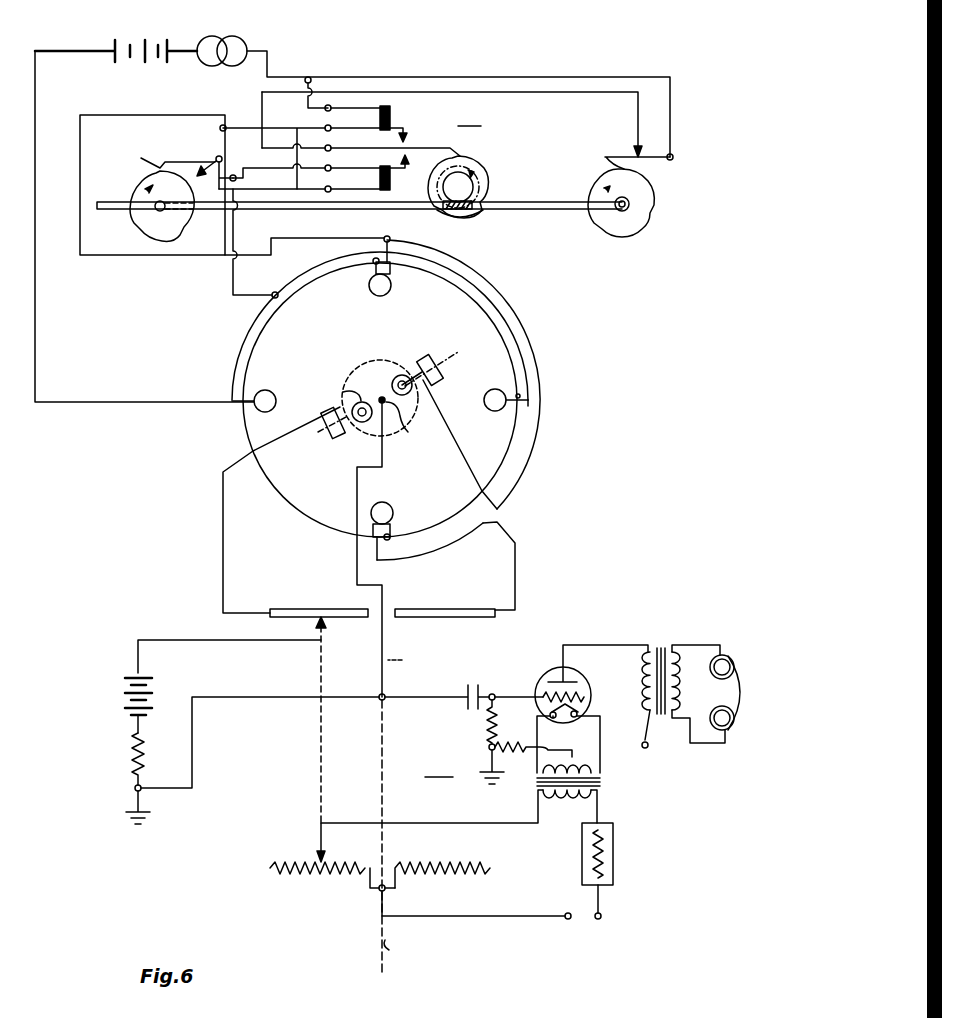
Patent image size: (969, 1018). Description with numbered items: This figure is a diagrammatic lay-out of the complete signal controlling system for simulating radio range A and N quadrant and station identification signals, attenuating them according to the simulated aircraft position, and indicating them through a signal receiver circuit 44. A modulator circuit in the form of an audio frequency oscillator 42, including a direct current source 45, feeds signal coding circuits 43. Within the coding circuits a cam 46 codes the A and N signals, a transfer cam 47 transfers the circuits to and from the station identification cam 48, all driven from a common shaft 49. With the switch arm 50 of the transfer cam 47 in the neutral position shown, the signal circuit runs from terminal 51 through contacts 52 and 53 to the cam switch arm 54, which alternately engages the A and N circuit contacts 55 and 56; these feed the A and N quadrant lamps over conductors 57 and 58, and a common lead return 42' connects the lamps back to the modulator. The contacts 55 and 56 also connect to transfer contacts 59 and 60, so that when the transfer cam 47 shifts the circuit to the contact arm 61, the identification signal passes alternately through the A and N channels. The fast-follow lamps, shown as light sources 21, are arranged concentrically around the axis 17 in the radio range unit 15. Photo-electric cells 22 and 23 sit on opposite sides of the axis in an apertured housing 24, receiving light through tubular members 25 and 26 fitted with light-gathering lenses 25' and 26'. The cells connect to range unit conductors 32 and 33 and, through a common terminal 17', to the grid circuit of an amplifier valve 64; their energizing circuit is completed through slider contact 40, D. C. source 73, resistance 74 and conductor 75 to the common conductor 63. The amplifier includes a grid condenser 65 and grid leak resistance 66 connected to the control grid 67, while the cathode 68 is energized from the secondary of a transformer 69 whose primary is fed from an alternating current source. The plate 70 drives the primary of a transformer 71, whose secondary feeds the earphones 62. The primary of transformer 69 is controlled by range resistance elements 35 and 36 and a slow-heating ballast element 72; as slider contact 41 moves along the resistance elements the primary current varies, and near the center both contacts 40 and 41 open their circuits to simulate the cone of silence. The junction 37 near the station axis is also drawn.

The radio range unit 15 is at (552, 372).
The axis 17 is at (399, 688).
The common terminal 17' is at (410, 419).
The light sources 21 is at (368, 290).
The photo-electric cell 22 is at (346, 392).
The photo-electric cell 23 is at (384, 368).
The apertured housing 24 is at (371, 359).
The tubular member 25 is at (303, 438).
The light-gathering lens 25' is at (317, 432).
The tubular member 26 is at (452, 408).
The light-gathering lens 26' is at (447, 369).
The range unit conductor 32 is at (306, 588).
The range unit conductor 33 is at (449, 586).
The range resistance element 35 is at (268, 866).
The range resistance element 36 is at (466, 846).
The junction 37 is at (377, 892).
The slider contact 40 is at (325, 621).
The slider contact 41 is at (320, 856).
The audio frequency oscillator 42 is at (435, 89).
The common lead return 42' is at (144, 226).
The signal coding circuits 43 is at (470, 116).
The signal receiver circuit 44 is at (439, 767).
The direct current source 45 is at (118, 45).
The cam 46 is at (130, 190).
The transfer cam 47 is at (490, 182).
The cam 48 is at (652, 188).
The common shaft 49 is at (537, 211).
The switch arm 50 is at (458, 153).
The terminal 51 is at (307, 76).
The contact 52 is at (369, 116).
The contact 53 is at (365, 150).
The cam switch arm 54 is at (152, 142).
The A circuit contact 55 is at (198, 154).
The N circuit contact 56 is at (222, 170).
The conductor 57 is at (108, 258).
The conductor 58 is at (229, 296).
The transfer contact 59 is at (416, 110).
The transfer contact 60 is at (405, 168).
The contact arm 61 is at (613, 155).
The earphones 62 is at (738, 666).
The common conductor 63 is at (408, 659).
The valve 64 is at (551, 664).
The grid condenser 65 is at (470, 683).
The grid leak resistance 66 is at (485, 720).
The control grid 67 is at (590, 694).
The cathode 68 is at (583, 711).
The transformer 69 is at (598, 784).
The plate 70 is at (566, 680).
The transformer 71 is at (659, 646).
The resistance ballast element 72 is at (614, 855).
The D. C. source 73 is at (124, 701).
The resistance 74 is at (133, 751).
The conductor 75 is at (268, 696).